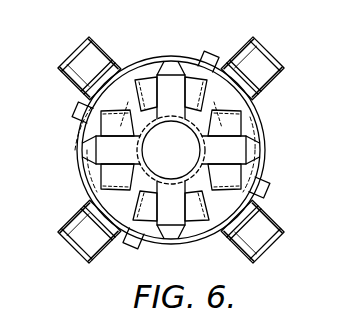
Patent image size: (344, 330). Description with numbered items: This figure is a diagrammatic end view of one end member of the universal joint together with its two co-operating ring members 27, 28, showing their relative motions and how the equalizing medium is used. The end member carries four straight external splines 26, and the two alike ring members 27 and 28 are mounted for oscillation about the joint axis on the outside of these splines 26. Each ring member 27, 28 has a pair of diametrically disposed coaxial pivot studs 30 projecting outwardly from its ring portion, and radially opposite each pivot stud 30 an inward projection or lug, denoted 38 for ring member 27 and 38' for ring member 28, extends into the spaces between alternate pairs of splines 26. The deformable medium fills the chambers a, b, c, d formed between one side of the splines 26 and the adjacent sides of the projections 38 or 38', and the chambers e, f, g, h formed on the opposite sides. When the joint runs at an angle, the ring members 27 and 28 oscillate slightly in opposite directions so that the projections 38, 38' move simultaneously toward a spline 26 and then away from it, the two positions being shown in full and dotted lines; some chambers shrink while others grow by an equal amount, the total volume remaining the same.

The splines 26 is at (100, 144).
The ring member 27 is at (213, 66).
The ring member 28 is at (79, 113).
The pivot studs 30 is at (82, 70).
The inward projection 38 is at (257, 113).
The inward projection 38' is at (150, 80).